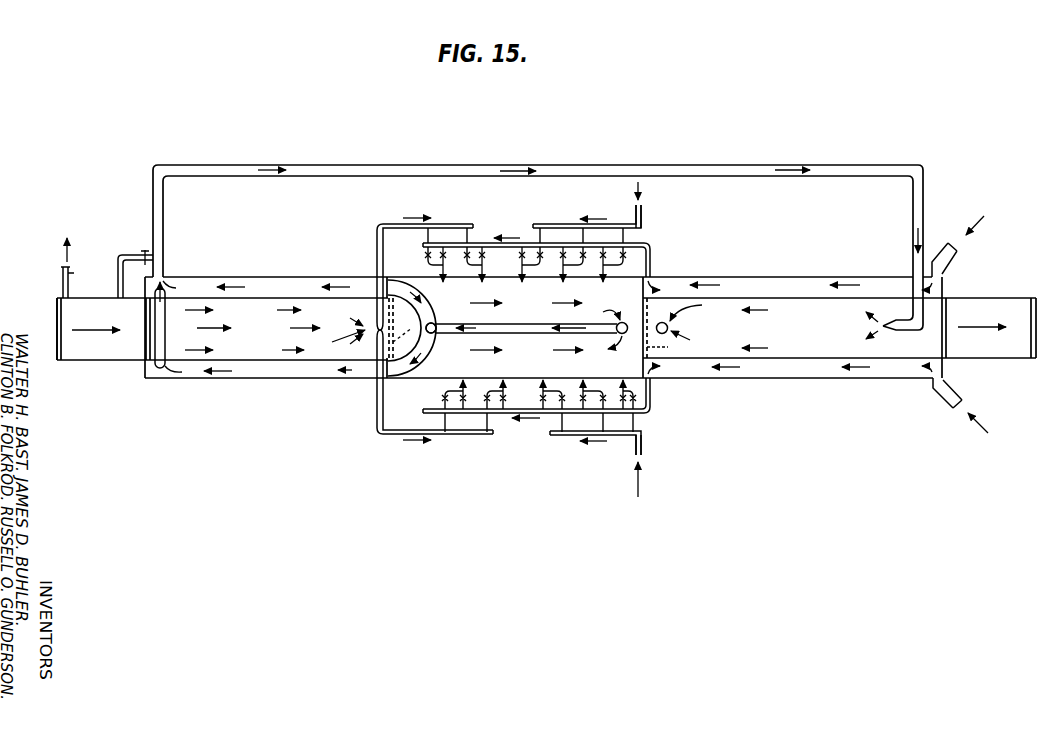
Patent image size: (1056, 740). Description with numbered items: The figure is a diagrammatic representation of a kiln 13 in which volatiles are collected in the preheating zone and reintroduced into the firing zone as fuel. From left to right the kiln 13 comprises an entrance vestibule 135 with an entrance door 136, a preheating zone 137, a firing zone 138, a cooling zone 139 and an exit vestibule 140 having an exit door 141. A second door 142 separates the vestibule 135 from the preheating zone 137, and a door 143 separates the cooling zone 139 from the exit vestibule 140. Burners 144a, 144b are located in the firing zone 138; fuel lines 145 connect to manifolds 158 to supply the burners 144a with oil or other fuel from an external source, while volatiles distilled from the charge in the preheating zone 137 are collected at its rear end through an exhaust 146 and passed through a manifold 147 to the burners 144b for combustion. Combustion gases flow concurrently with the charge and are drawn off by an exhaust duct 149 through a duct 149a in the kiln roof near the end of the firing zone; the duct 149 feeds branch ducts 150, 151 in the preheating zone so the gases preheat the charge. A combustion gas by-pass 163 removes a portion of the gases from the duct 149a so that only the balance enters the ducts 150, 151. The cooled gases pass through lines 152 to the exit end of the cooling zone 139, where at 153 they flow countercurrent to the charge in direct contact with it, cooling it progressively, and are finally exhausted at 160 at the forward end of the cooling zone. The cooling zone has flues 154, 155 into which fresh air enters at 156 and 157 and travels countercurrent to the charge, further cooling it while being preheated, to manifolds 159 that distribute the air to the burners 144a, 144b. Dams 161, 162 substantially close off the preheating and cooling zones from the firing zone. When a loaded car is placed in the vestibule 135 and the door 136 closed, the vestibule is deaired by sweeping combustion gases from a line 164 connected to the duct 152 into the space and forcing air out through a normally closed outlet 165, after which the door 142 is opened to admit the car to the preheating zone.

The kiln 13 is at (699, 382).
The entrance vestibule 135 is at (85, 352).
The entrance door 136 is at (57, 298).
The preheating zone 137 is at (252, 352).
The firing zone 138 is at (426, 373).
The cooling zone 139 is at (788, 352).
The exit vestibule 140 is at (1000, 360).
The exit door 141 is at (1030, 300).
The second door 142 is at (152, 358).
The door 143 is at (947, 353).
The burners 144a is at (604, 284).
The burners 144b is at (482, 284).
The fuel lines 145 is at (643, 214).
The exhaust 146 is at (345, 333).
The manifold 147 is at (384, 223).
The exhaust duct 149 is at (630, 336).
The duct 149a is at (522, 336).
The branch duct 150 is at (303, 278).
The branch duct 151 is at (293, 381).
The lines 152 is at (152, 190).
The combustion gas introduction point 153 is at (893, 330).
The flue 154 is at (790, 277).
The flue 155 is at (842, 380).
The fresh air inlet 156 is at (935, 250).
The fresh air inlet 157 is at (954, 409).
The manifolds 158 is at (546, 222).
The manifolds 159 is at (480, 242).
The combustion gas exhaust 160 is at (684, 320).
The dam 161 is at (408, 325).
The dam 162 is at (672, 351).
The combustion gas by-pass 163 is at (438, 336).
The line 164 is at (124, 254).
The outlet 165 is at (63, 270).